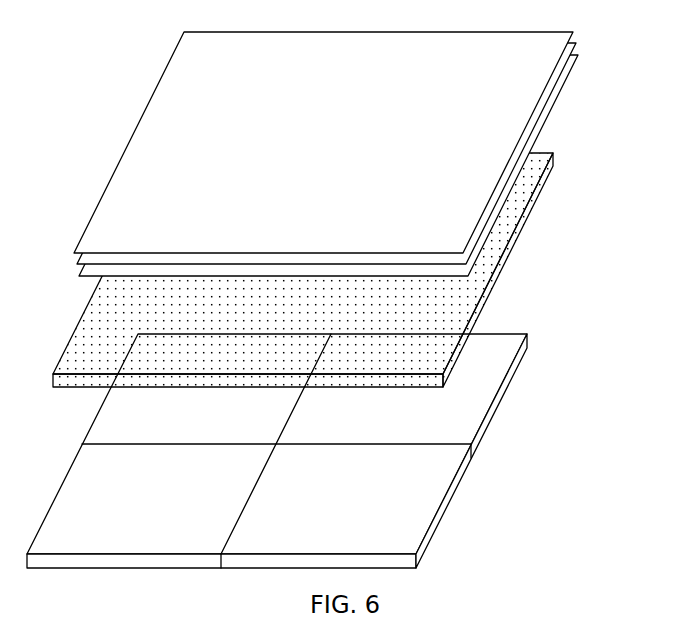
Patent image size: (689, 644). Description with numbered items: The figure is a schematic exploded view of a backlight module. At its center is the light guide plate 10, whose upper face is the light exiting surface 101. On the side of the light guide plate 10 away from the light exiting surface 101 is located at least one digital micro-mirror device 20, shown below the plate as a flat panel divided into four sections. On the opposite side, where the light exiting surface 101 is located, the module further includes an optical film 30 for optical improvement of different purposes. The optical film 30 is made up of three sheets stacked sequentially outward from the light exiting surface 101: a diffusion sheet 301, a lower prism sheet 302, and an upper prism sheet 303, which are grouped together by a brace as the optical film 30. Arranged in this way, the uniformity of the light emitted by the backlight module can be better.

The light guide plate 10 is at (317, 270).
The light exiting surface 101 is at (473, 288).
The digital micro-mirror device 20 is at (100, 410).
The optical film 30 is at (367, 154).
The diffusion sheet 301 is at (540, 130).
The lower prism sheet 302 is at (543, 108).
The upper prism sheet 303 is at (618, 152).